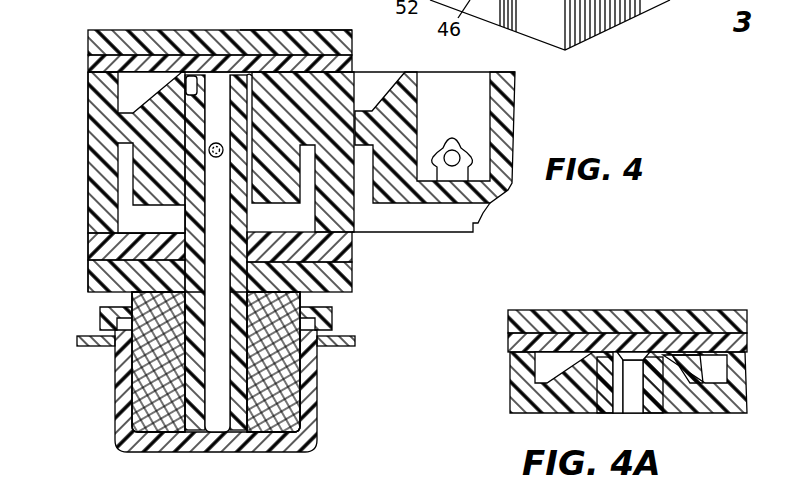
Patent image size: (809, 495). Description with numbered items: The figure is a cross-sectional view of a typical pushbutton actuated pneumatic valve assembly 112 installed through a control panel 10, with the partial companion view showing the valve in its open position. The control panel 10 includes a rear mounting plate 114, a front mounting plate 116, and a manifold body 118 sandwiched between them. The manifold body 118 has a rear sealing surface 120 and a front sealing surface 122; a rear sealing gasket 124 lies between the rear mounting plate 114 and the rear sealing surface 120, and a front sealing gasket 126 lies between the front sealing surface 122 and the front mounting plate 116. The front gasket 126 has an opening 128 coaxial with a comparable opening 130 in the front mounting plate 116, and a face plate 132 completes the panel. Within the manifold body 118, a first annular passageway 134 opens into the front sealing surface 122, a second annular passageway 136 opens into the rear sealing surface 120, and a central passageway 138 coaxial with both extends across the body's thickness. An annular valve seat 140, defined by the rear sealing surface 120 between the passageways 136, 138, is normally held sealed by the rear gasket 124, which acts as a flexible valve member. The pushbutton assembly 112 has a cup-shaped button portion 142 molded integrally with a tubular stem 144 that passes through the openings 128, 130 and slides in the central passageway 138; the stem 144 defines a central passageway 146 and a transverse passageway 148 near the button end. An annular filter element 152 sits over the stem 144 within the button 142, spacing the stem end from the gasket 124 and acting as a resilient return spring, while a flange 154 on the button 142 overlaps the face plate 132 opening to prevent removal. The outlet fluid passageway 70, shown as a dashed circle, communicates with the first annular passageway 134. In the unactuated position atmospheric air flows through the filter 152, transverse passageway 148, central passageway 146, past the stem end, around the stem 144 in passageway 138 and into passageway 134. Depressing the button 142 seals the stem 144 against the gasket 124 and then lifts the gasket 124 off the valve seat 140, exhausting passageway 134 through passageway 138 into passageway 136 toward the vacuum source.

In FIG. 4, the control panel 10 is at (82, 150).
In FIG. 4, the pushbutton outlet fluid passageway 70 is at (215, 143).
In FIG. 4, the pushbutton valve assembly 112 is at (108, 455).
In FIG. 4, the rear mounting plate 114 is at (225, 30).
In FIG. 4A, the rear mounting plate 114 is at (688, 310).
In FIG. 4, the front mounting plate 116 is at (88, 270).
In FIG. 4, the manifold body 118 is at (90, 88).
In FIG. 4A, the manifold body 118 is at (512, 402).
In FIG. 4, the rear sealing surface 120 is at (354, 70).
In FIG. 4, the front sealing surface 122 is at (88, 240).
In FIG. 4, the rear sealing gasket 124 is at (88, 62).
In FIG. 4A, the rear sealing gasket 124 is at (512, 340).
In FIG. 4, the front sealing gasket 126 is at (352, 255).
In FIG. 4, the opening 128 is at (186, 218).
In FIG. 4, the opening 130 is at (130, 292).
In FIG. 4, the face plate 132 is at (78, 340).
In FIG. 4, the first annular passageway 134 is at (125, 182).
In FIG. 4, the second annular passageway 136 is at (130, 100).
In FIG. 4A, the second annular passageway 136 is at (547, 367).
In FIG. 4, the central passageway 138 is at (196, 82).
In FIG. 4, the annular valve seat 140 is at (250, 44).
In FIG. 4A, the annular valve seat 140 is at (590, 352).
In FIG. 4, the cup-shaped button portion 142 is at (120, 408).
In FIG. 4, the stem portion 144 is at (190, 365).
In FIG. 4A, the stem portion 144 is at (613, 412).
In FIG. 4, the central passageway 146 is at (219, 433).
In FIG. 4, the transverse passageway 148 is at (306, 358).
In FIG. 4, the annular filter element 152 is at (290, 403).
In FIG. 4, the flange 154 is at (320, 312).